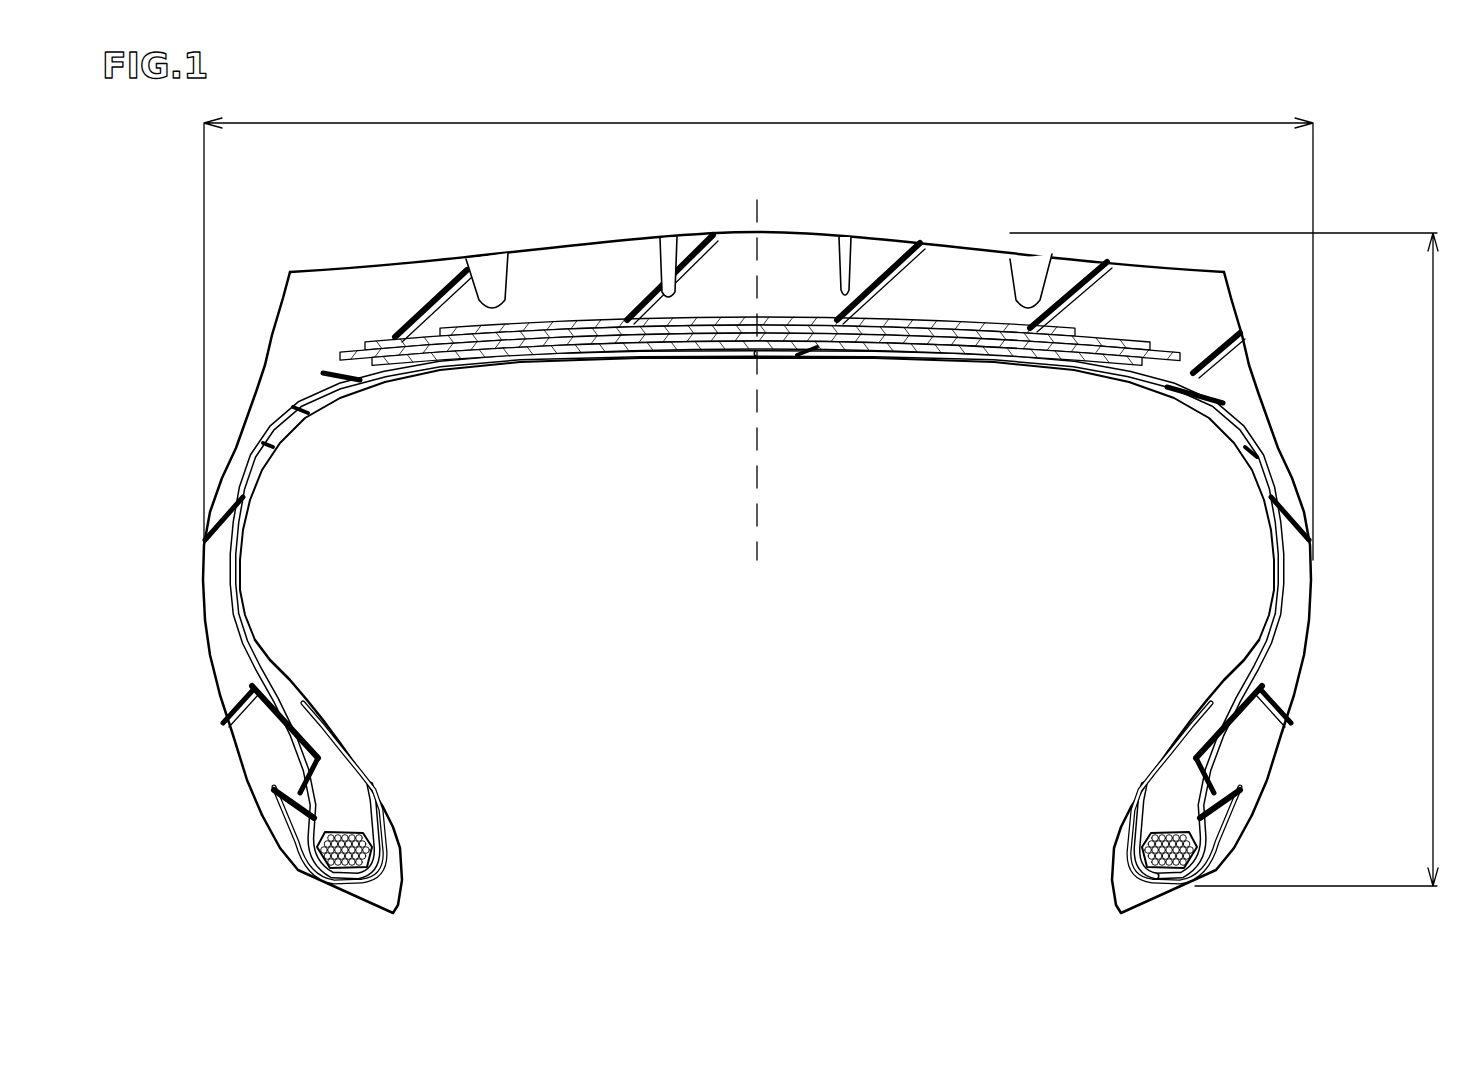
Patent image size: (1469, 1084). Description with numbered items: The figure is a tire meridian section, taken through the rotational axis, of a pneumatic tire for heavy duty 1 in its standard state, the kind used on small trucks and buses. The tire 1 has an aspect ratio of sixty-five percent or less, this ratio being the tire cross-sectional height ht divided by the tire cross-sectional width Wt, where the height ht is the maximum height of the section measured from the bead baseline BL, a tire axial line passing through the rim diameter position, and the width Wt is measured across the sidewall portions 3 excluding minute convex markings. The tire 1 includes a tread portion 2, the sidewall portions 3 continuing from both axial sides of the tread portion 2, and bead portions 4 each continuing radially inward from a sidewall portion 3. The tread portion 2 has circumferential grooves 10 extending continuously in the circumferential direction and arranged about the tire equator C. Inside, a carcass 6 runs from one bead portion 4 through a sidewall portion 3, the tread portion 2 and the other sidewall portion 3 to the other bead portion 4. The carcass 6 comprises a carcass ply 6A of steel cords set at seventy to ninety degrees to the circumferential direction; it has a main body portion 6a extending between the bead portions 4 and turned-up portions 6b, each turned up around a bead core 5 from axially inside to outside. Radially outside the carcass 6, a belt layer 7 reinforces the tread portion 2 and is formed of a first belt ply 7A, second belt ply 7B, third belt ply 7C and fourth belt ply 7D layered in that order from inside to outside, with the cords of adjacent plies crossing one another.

The pneumatic tire for heavy duty 1 is at (1107, 206).
The tread portion 2 is at (345, 258).
The sidewall portions 3 is at (190, 557).
The bead portions 4 is at (235, 791).
The bead cores 5 is at (1205, 843).
The carcass 6 is at (653, 350).
The carcass ply 6A is at (1063, 632).
The main body portion 6a is at (1263, 667).
The turned-up portions 6b is at (1239, 762).
The belt layer 7 is at (770, 468).
The first belt ply 7A is at (775, 342).
The second belt ply 7B is at (847, 335).
The third belt ply 7C is at (910, 330).
The fourth belt ply 7D is at (972, 325).
The circumferential grooves 10 is at (487, 280).
The tire equator C is at (757, 366).
The tire cross-sectional width Wt is at (758, 325).
The tire cross-sectional height ht is at (1238, 559).
The bead baseline BL is at (1293, 887).